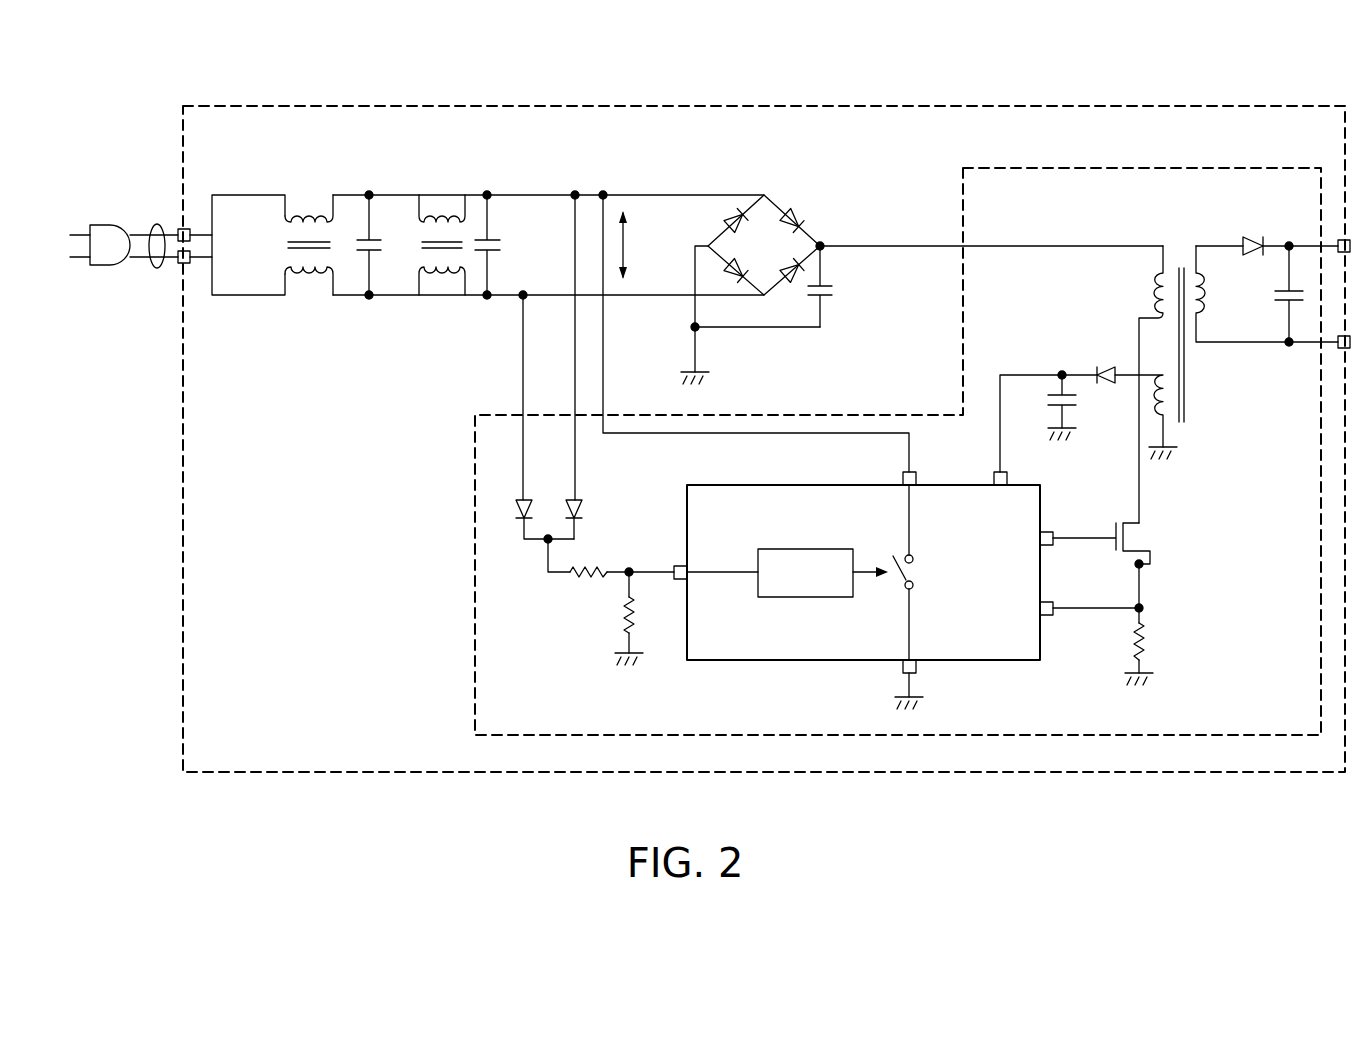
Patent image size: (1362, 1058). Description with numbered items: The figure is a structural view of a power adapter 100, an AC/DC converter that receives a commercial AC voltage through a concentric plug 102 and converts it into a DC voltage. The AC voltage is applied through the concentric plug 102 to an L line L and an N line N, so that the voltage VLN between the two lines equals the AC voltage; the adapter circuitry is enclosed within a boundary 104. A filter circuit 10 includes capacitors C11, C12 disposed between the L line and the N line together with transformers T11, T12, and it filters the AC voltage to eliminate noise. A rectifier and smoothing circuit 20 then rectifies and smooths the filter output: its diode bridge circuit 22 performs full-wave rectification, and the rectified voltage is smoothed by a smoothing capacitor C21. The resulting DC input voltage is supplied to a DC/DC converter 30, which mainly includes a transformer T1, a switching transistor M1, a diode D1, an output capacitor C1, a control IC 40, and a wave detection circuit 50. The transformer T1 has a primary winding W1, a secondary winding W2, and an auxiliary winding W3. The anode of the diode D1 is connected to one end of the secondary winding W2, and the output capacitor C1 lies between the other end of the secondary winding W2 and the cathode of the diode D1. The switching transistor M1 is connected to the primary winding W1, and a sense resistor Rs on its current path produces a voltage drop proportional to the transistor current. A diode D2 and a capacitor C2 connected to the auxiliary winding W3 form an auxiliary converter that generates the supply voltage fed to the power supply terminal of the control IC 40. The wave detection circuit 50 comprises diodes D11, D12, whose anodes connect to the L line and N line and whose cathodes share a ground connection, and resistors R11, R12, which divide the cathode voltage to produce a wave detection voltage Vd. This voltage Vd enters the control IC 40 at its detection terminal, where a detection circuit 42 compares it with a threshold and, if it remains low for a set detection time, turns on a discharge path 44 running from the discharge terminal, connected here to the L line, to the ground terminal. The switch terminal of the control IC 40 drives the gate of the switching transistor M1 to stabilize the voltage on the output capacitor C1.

The power adapter 100 is at (1192, 64).
The concentric plug 102 is at (105, 268).
The housing / circuit board boundary 104 is at (684, 774).
The filter circuit 10 is at (488, 242).
The rectifier and smoothing circuit 20 is at (791, 271).
The diode bridge circuit 22 is at (797, 205).
The DC/DC converter 30 is at (1102, 168).
The control IC 40 is at (863, 590).
The detection circuit 42 is at (803, 600).
The discharge path 44 is at (920, 572).
The wave detection circuit 50 is at (588, 585).
The L line L is at (242, 193).
The N line N is at (242, 297).
The transformer T11 is at (308, 198).
The transformer T12 is at (443, 202).
The capacitor C11 is at (383, 243).
The capacitor C12 is at (521, 245).
The smoothing capacitor C21 is at (854, 286).
The voltage between the L line and the N line VLN is at (640, 245).
The transformer T1 is at (1215, 355).
The primary winding W1 is at (1155, 291).
The secondary winding W2 is at (1212, 297).
The auxiliary winding W3 is at (1152, 401).
The diode D1 is at (1256, 237).
The diode D2 is at (1105, 364).
The output capacitor C1 is at (1271, 300).
The capacitor C2 is at (1046, 402).
The switching transistor M1 is at (1158, 542).
The sense resistor Rs is at (1150, 645).
The diode D11 is at (533, 490).
The diode D12 is at (585, 490).
The resistor R11 is at (582, 588).
The resistor R12 is at (658, 660).
The wave detection voltage Vd is at (634, 555).